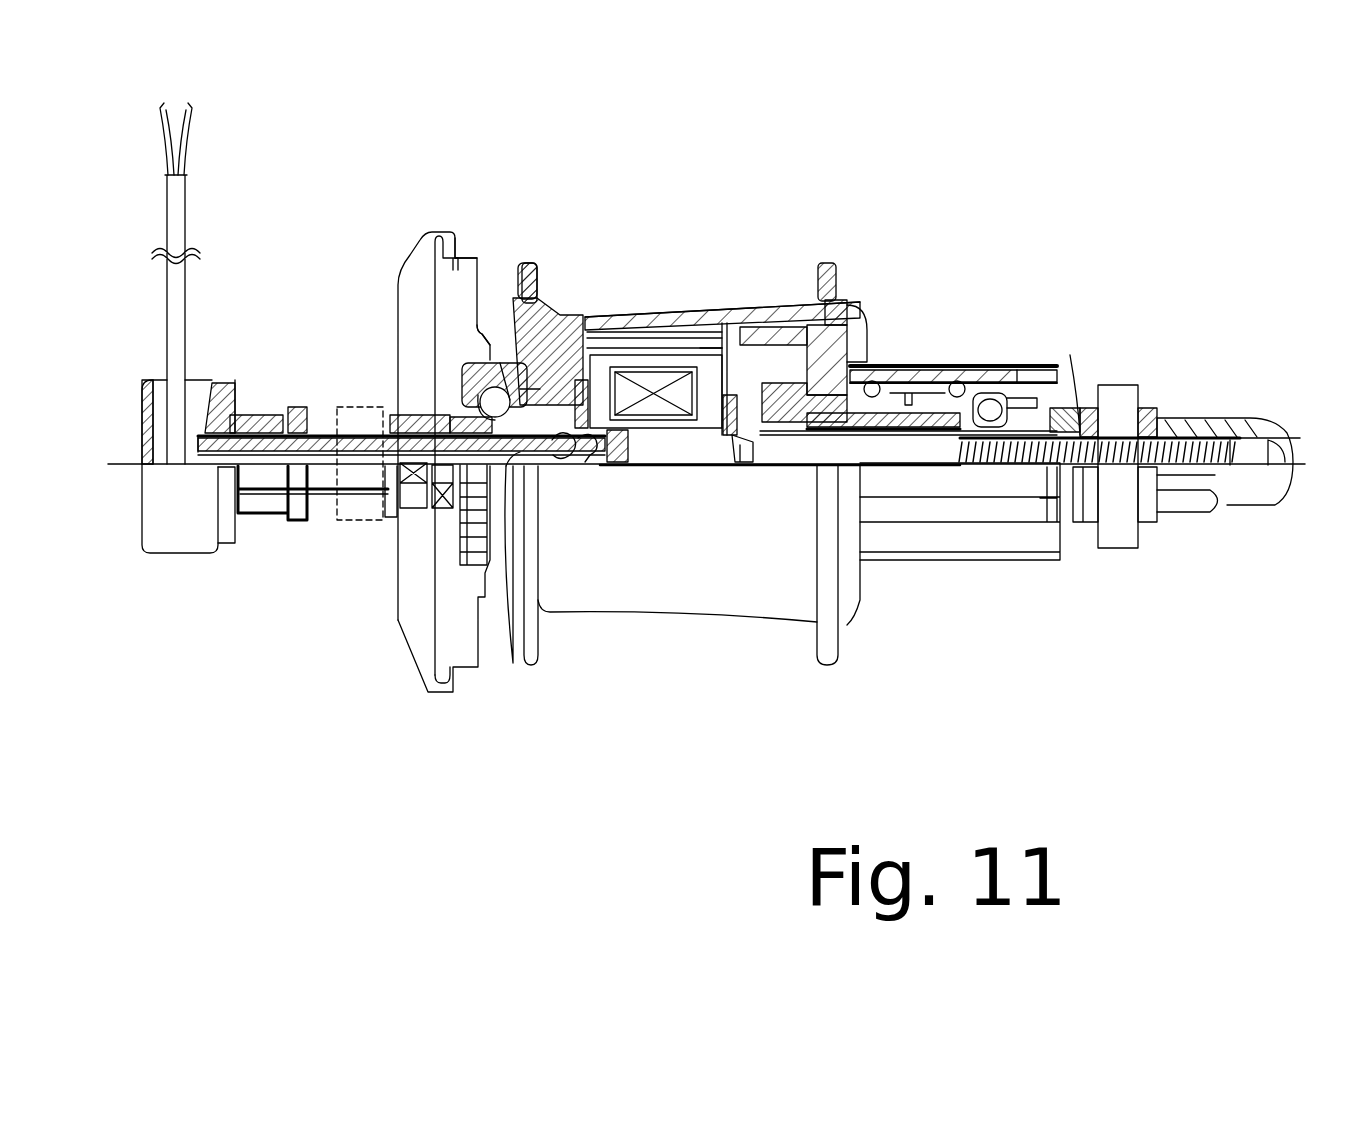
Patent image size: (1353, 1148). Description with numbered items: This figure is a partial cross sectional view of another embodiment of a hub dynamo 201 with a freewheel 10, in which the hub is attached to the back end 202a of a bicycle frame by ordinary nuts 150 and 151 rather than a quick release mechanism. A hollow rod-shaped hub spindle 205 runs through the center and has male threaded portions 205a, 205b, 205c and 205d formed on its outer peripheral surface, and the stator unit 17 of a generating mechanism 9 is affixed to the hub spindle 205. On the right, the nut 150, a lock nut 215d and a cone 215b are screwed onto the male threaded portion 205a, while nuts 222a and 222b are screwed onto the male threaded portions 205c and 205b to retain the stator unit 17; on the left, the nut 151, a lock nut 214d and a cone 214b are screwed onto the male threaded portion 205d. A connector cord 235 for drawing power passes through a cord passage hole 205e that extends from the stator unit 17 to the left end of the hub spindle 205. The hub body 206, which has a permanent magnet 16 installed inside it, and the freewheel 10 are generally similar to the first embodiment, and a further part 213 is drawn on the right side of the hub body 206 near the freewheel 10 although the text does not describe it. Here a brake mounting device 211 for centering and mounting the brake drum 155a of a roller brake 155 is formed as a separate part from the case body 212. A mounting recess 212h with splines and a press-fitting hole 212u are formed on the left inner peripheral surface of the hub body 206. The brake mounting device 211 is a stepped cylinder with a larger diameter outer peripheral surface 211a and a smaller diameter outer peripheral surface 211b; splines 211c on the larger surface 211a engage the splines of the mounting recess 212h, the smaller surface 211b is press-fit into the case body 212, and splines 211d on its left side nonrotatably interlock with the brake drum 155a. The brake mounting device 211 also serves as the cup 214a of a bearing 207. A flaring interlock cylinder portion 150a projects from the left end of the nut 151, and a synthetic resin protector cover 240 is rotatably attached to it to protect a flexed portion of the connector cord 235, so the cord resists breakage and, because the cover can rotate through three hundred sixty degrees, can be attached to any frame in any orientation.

The generating mechanism 9 is at (718, 332).
The freewheel 10 is at (955, 368).
The permanent magnet 16 is at (705, 378).
The stator unit 17 is at (702, 466).
The nut 150 is at (1185, 415).
The interlock cylinder portion 150a is at (233, 380).
The nut 151 is at (268, 408).
The roller brake 155 is at (403, 245).
The brake drum 155a is at (458, 268).
The hub dynamo 201 is at (690, 232).
The back end 202a is at (350, 383).
The hub spindle 205 is at (808, 405).
The male threaded portion 205a is at (1063, 405).
The male threaded portion 205b is at (733, 466).
The male threaded portion 205c is at (567, 466).
The male threaded portion 205d is at (387, 480).
The cord passage hole 205e is at (318, 432).
The hub body 206 is at (656, 312).
The bearing 207 is at (493, 563).
The brake mounting device 211 is at (465, 330).
The larger diameter outer peripheral surface 211a is at (510, 330).
The smaller diameter outer peripheral surface 211b is at (533, 330).
The splines 211c is at (515, 330).
The splines 211d is at (485, 360).
The case body 212 is at (556, 330).
The mounting recess 212h is at (520, 330).
The press-fitting hole 212u is at (562, 340).
The right bearing 213 is at (850, 335).
The cup 214a is at (512, 466).
The cone 214b is at (392, 388).
The lock nut 214d is at (410, 500).
The cone 215b is at (1010, 466).
The lock nut 215d is at (1068, 523).
The nut 222a is at (600, 455).
The nut 222b is at (770, 462).
The connector cord 235 is at (522, 466).
The protector cover 240 is at (220, 382).